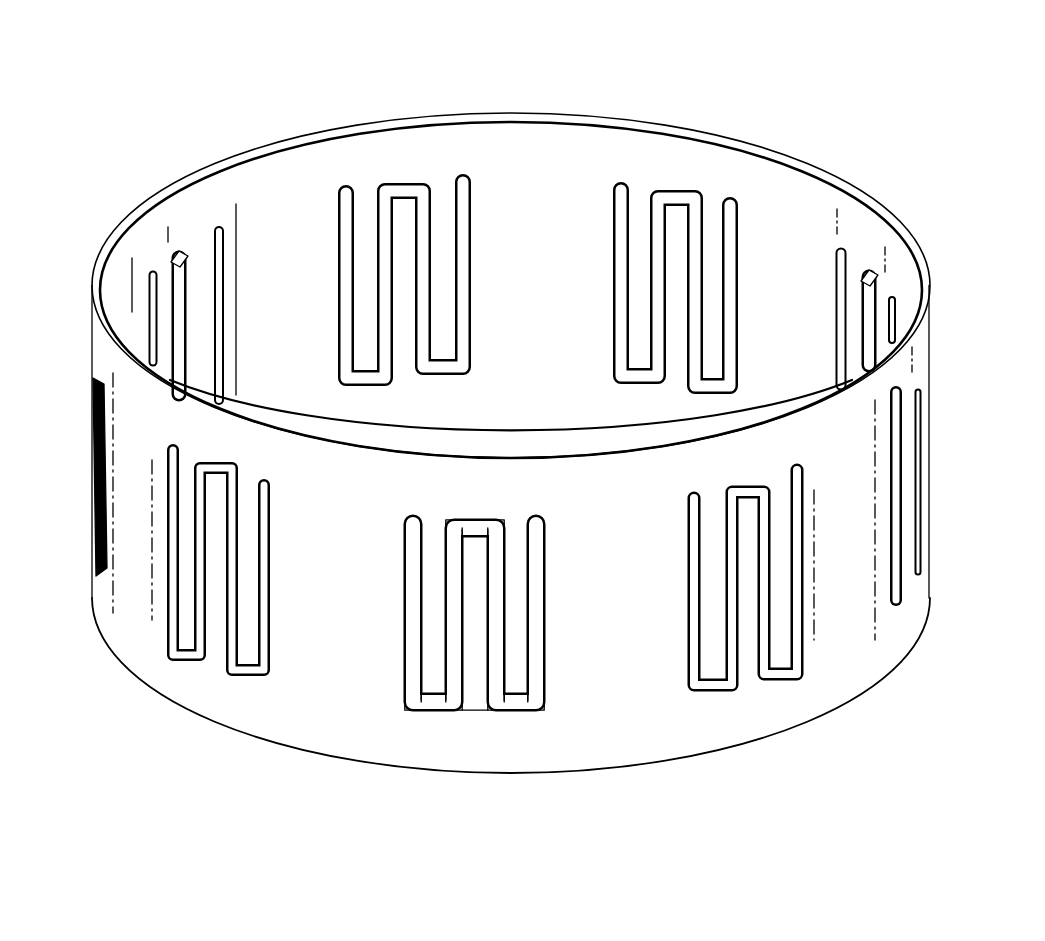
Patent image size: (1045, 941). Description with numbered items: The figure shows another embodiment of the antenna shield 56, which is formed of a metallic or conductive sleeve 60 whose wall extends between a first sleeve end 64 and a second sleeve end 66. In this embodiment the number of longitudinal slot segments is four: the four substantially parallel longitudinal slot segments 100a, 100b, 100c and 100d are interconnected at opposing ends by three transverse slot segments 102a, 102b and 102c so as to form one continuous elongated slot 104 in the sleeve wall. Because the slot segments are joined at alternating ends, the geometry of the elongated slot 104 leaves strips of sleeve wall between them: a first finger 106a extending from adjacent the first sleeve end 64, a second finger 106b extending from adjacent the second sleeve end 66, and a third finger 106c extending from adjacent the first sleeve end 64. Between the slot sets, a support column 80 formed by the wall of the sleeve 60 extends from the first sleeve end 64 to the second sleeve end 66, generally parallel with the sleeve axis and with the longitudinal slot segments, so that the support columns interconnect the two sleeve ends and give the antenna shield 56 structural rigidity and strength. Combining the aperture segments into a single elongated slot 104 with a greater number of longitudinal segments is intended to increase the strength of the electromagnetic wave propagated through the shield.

The antenna shield 56 is at (248, 76).
The sleeve 60 is at (802, 197).
The first sleeve end 64 is at (713, 138).
The second sleeve end 66 is at (215, 723).
The support column 80 is at (150, 597).
The longitudinal slot segment 100a is at (405, 532).
The longitudinal slot segment 100b is at (446, 612).
The longitudinal slot segment 100c is at (504, 624).
The longitudinal slot segment 100d is at (544, 566).
The transverse slot segment 102a is at (438, 706).
The transverse slot segment 102b is at (475, 519).
The transverse slot segment 102c is at (517, 706).
The elongated slot 104 is at (473, 747).
The first finger 106a is at (432, 562).
The second finger 106b is at (475, 663).
The third finger 106c is at (518, 588).